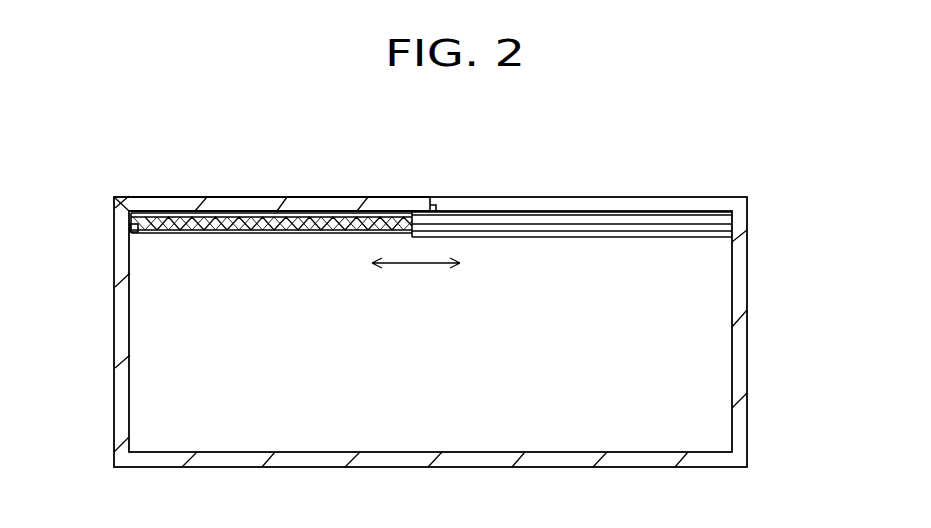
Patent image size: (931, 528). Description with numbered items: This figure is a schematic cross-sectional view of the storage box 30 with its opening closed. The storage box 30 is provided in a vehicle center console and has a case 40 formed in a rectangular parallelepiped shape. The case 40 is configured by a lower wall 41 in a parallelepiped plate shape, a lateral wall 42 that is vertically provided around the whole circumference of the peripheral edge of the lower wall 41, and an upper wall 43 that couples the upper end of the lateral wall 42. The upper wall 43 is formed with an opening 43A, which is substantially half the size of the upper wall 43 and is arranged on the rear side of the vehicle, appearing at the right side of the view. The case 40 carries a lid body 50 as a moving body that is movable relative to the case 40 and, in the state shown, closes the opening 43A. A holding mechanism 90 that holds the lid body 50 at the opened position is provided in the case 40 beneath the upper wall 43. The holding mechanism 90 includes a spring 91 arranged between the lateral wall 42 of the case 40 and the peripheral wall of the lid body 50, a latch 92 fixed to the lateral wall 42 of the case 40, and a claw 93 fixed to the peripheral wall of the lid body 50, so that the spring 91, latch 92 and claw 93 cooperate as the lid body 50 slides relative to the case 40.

The storage box 30 is at (793, 210).
The case 40 is at (748, 292).
The lower wall 41 is at (403, 468).
The lateral wall 42 is at (114, 390).
The upper wall 43 is at (228, 196).
The opening 43A is at (432, 199).
The lid body 50 is at (565, 213).
The holding mechanism 90 is at (295, 270).
The spring 91 is at (263, 235).
The latch 92 is at (138, 235).
The claw 93 is at (383, 225).